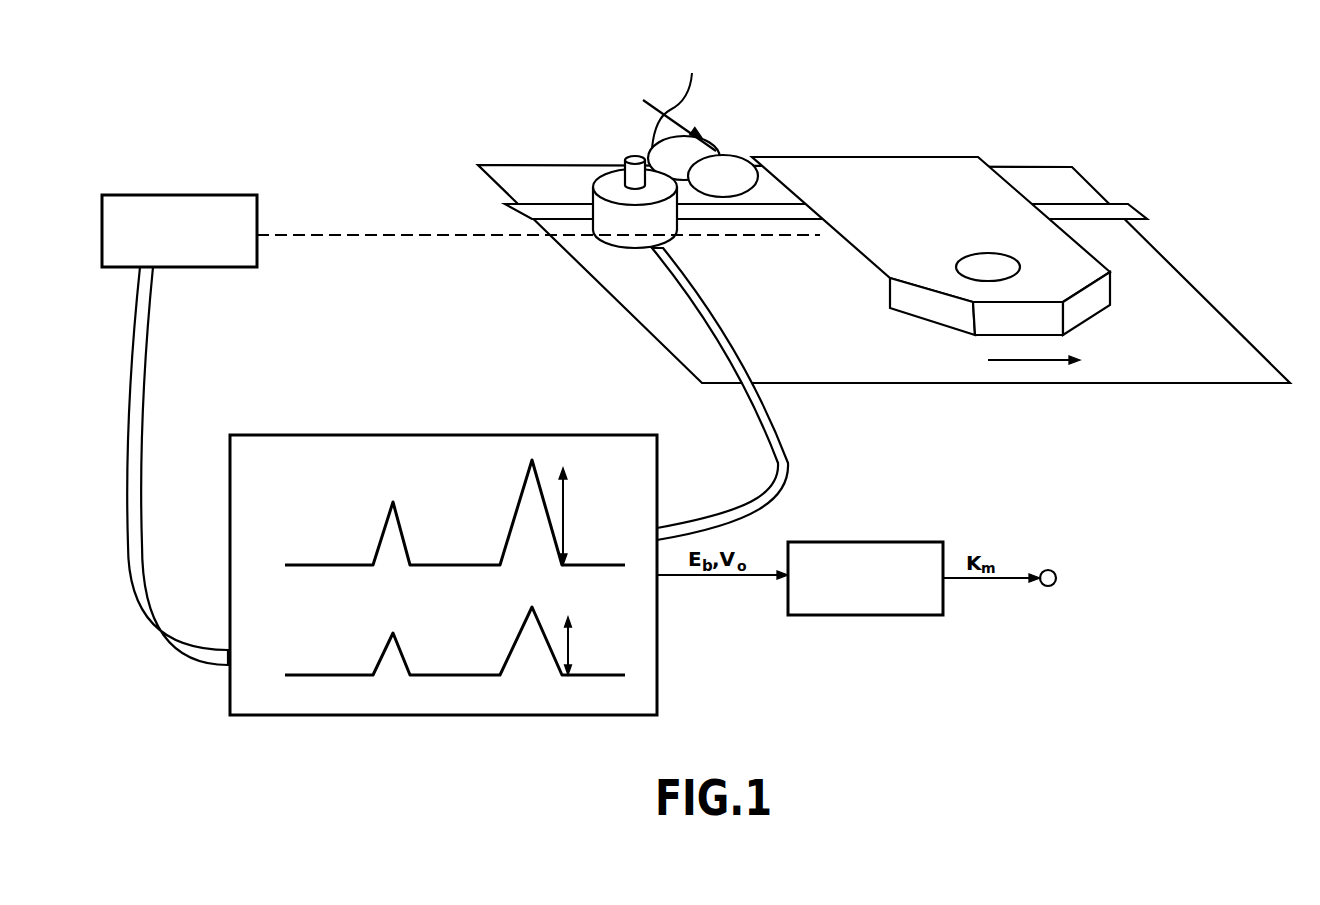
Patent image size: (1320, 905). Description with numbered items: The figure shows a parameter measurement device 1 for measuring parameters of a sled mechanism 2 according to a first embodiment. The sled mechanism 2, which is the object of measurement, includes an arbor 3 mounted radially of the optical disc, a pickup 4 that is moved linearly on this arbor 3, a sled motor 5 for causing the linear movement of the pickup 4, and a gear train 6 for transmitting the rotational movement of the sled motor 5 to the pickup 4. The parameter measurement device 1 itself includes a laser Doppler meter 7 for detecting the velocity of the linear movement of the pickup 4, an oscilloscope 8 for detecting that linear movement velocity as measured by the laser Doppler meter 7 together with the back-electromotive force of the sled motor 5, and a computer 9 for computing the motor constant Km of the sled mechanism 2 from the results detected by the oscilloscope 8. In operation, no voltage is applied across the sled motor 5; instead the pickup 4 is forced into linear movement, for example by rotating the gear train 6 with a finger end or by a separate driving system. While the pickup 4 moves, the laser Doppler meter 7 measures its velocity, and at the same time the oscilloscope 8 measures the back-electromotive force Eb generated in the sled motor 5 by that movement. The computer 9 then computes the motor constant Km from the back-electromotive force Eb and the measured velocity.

The parameter measurement device 1 is at (773, 270).
The sled mechanism 2 is at (1054, 131).
The arbor 3 is at (1115, 203).
The pickup 4 is at (905, 157).
The sled motor 5 is at (605, 167).
The gear train 6 is at (676, 161).
The laser Doppler meter 7 is at (193, 195).
The oscilloscope 8 is at (490, 435).
The computer 9 is at (895, 542).